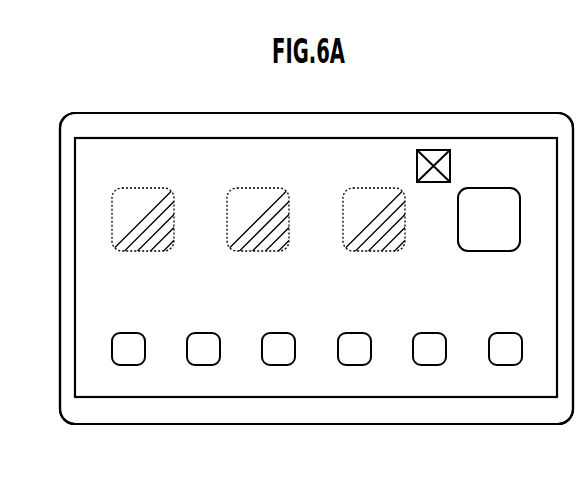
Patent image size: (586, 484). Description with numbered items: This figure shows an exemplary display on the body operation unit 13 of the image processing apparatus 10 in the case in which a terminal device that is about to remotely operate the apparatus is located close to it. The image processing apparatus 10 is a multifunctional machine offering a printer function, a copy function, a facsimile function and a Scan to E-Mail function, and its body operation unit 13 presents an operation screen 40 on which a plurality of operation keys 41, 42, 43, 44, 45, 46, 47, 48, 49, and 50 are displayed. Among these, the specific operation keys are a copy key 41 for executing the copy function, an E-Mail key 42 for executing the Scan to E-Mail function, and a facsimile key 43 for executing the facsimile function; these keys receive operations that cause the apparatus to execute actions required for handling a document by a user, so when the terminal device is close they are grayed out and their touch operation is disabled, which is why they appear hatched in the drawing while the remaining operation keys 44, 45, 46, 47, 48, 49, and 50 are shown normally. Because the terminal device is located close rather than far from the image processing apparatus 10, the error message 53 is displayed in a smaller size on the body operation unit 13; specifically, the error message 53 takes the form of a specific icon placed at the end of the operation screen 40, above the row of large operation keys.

The image processing apparatus 10 is at (64, 89).
The body operation unit 13 is at (115, 113).
The operation screen 40 is at (222, 155).
The copy key 41 is at (143, 188).
The E-Mail key 42 is at (258, 188).
The facsimile key 43 is at (355, 188).
The operation key 44 is at (490, 188).
The operation key 45 is at (128, 333).
The operation key 46 is at (203, 333).
The operation key 47 is at (278, 333).
The operation key 48 is at (354, 333).
The operation key 49 is at (429, 333).
The operation key 50 is at (505, 333).
The error message 53 is at (433, 150).